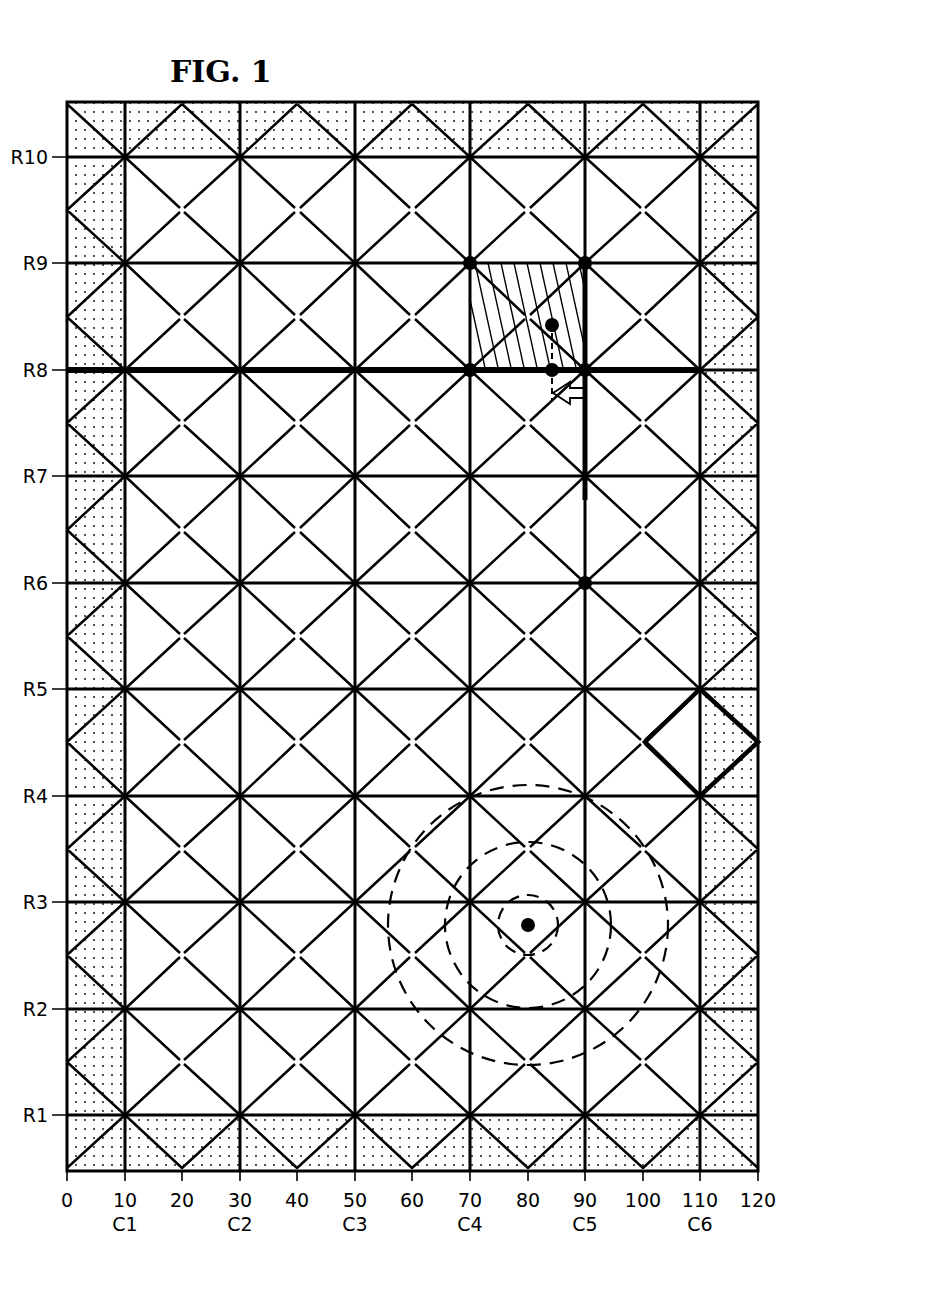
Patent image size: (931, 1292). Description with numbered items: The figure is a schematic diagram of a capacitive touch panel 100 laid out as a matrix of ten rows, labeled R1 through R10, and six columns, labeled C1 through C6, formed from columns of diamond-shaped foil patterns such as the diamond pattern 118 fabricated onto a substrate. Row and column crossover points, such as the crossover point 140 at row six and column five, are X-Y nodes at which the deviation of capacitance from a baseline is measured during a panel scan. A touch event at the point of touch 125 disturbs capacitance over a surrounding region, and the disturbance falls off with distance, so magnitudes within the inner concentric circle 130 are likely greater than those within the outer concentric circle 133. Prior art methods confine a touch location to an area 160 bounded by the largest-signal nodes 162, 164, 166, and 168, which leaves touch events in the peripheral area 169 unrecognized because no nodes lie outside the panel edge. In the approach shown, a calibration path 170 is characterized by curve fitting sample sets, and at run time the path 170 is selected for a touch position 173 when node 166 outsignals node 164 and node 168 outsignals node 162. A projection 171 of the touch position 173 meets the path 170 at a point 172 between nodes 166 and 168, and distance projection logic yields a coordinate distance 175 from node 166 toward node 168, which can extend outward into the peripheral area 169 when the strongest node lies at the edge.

The touch panel 100 is at (557, 62).
The peripheral area 169 is at (383, 101).
The calibration path 170 is at (303, 369).
The area bounded by largest-signal nodes 160 is at (540, 280).
The node 162 is at (468, 262).
The node 164 is at (587, 262).
The node 166 is at (588, 373).
The node 168 is at (468, 373).
The projection 171 is at (558, 350).
The point 172 is at (545, 378).
The touch position 173 is at (557, 322).
The coordinate distance 175 is at (562, 401).
The crossover point 140 is at (587, 581).
The diamond pattern 118 is at (736, 772).
The point of touch 125 is at (532, 925).
The concentric circle 130 is at (592, 1026).
The concentric circle 133 is at (575, 1060).